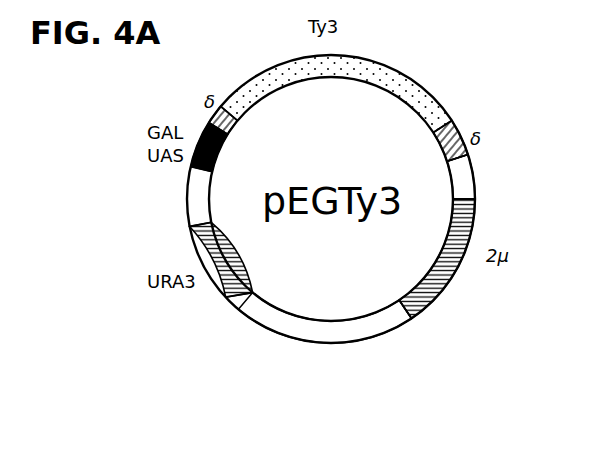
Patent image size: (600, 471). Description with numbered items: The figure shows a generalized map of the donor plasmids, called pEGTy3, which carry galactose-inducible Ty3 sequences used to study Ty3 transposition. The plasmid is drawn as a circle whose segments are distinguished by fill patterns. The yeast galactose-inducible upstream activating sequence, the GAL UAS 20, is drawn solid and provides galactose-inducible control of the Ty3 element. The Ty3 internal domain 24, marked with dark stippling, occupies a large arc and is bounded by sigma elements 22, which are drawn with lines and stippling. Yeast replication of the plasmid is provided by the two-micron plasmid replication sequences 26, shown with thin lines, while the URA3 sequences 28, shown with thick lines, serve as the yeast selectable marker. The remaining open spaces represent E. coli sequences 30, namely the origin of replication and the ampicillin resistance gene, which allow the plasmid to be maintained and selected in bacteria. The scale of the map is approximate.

The GAL1-10 UAS 20 is at (196, 134).
The sigma elements 22 is at (457, 136).
The Ty3 internal domain 24 is at (379, 72).
The 2-micron plasmid replication sequences 26 is at (433, 293).
The URA3 sequences 28 is at (228, 298).
The E. coli sequences 30 is at (463, 181).